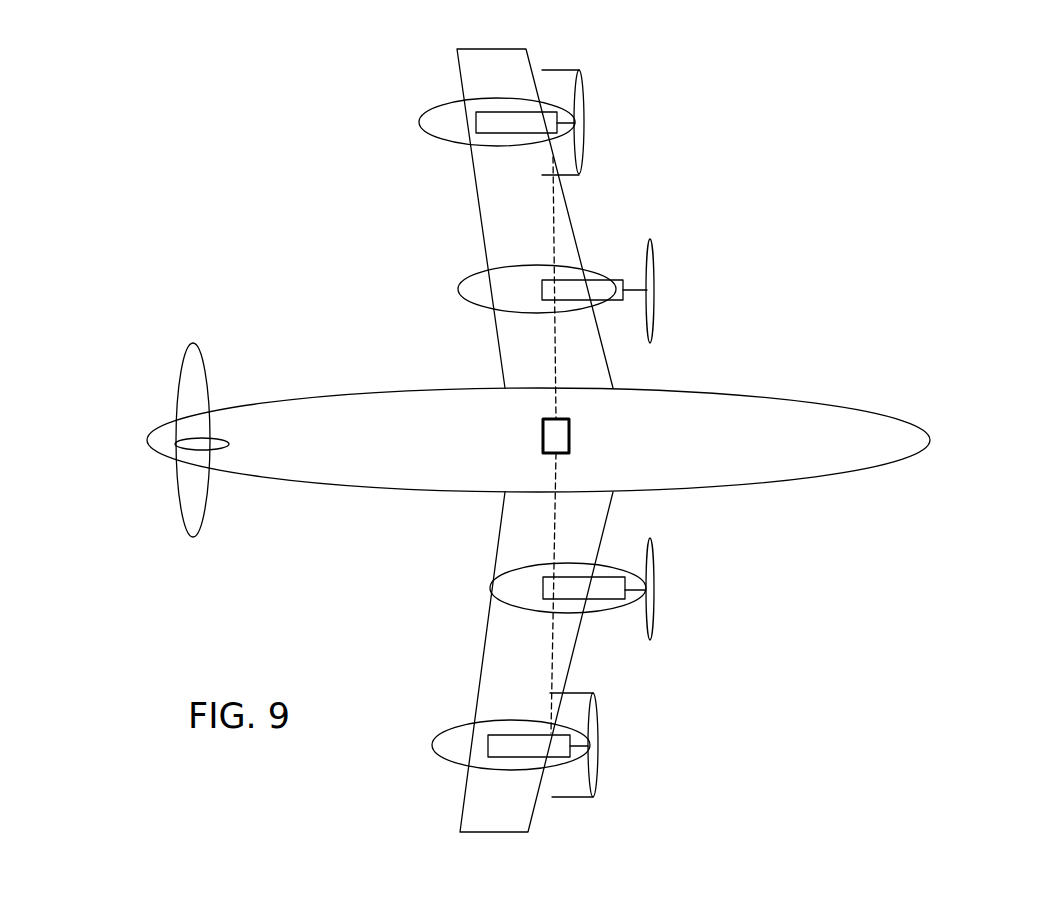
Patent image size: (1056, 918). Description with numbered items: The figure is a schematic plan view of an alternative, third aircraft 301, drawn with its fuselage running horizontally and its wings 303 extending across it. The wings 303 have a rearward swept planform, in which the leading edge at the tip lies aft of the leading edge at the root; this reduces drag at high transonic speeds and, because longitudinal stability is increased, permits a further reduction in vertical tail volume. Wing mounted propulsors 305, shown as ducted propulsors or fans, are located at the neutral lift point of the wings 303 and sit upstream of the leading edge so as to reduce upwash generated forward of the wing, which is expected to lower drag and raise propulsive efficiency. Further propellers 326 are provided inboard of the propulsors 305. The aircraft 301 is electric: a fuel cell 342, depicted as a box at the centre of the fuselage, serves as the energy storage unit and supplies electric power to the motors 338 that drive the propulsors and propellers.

The aircraft 301 is at (920, 278).
The wings 303 is at (490, 158).
The wing mounted propulsors 305 is at (587, 113).
The propellers 326 is at (652, 246).
The motors 338 is at (620, 302).
The fuel cell 342 is at (556, 454).